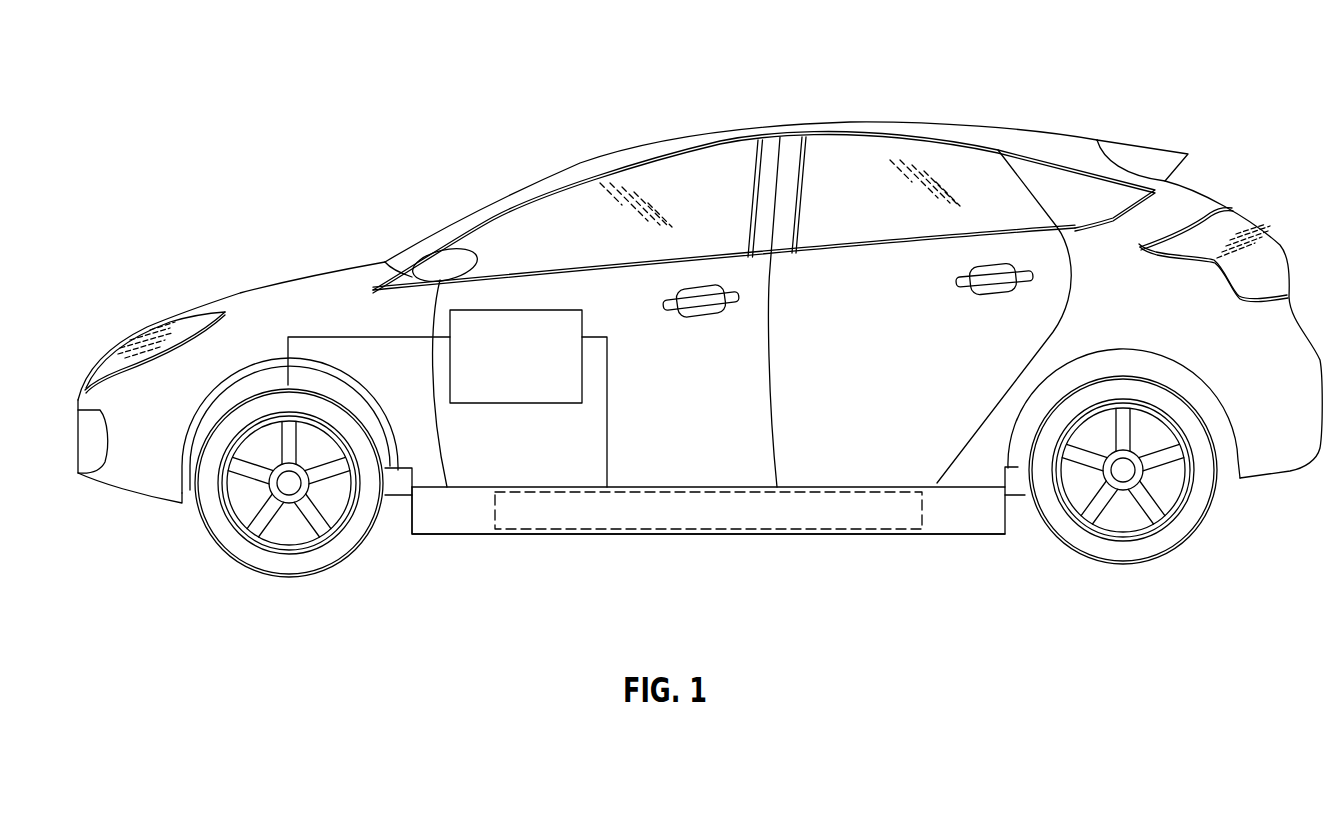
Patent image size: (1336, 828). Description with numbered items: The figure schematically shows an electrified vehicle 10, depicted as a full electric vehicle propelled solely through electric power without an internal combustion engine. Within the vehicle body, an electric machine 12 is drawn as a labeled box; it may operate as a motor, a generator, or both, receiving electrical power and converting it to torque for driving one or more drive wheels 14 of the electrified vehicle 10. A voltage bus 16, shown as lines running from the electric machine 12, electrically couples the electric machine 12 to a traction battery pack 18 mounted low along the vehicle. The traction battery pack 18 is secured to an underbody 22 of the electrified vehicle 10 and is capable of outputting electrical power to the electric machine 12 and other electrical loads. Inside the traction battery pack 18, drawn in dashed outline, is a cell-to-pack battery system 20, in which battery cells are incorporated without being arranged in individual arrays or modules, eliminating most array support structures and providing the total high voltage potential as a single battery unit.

The electrified vehicle 10 is at (1040, 74).
The electric machine 12 is at (450, 330).
The drive wheels 14 is at (232, 558).
The voltage bus 16 is at (583, 430).
The traction battery pack 18 is at (848, 535).
The cell-to-pack battery system 20 is at (923, 518).
The underbody 22 is at (468, 488).